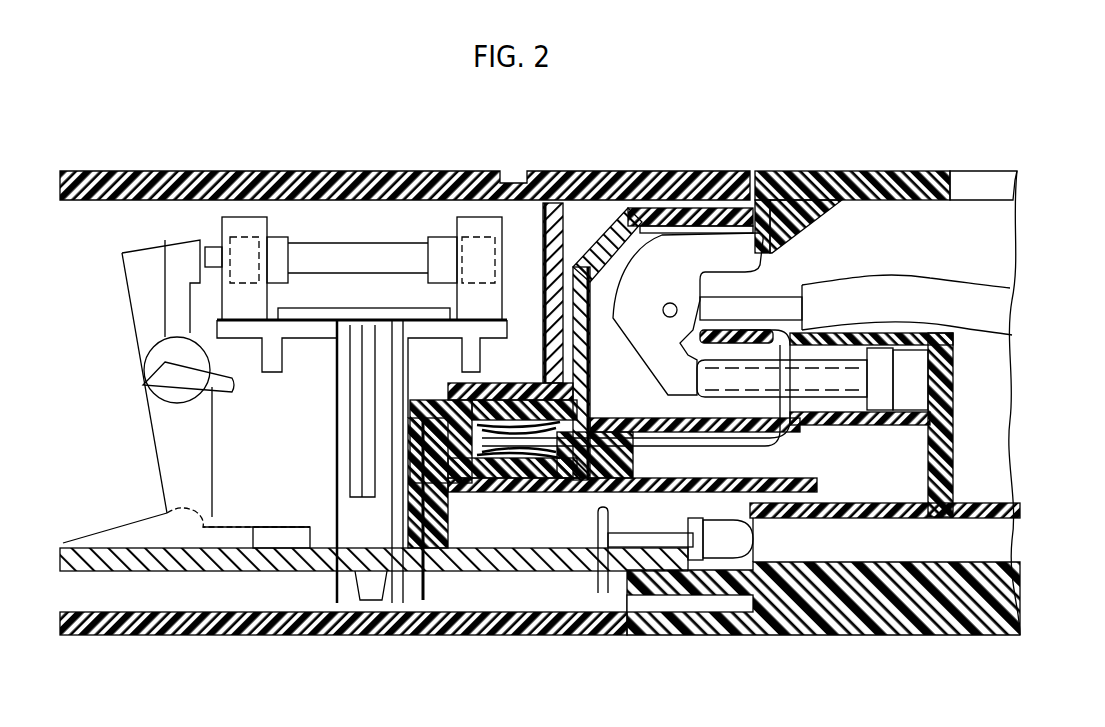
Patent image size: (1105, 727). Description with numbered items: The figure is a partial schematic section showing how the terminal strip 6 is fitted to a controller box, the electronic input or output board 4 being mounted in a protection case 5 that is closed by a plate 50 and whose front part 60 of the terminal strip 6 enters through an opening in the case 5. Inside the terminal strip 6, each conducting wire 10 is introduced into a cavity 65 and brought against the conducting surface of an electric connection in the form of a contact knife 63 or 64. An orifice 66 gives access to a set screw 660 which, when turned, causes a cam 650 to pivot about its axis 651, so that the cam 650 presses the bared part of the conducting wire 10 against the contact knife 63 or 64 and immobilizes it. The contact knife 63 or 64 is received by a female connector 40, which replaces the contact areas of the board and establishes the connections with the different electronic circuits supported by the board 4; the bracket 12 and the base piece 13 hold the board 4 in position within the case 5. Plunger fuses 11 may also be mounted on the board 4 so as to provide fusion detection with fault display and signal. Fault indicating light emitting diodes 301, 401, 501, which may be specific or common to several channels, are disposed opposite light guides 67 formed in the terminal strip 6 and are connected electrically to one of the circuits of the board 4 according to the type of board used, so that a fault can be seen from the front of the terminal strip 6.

The electronic input or output board 4 is at (248, 560).
The protection case 5 is at (73, 172).
The terminal strip 6 is at (848, 636).
The conducting wires 10 is at (988, 300).
The plunger fuses 11 is at (362, 256).
The bracket 12 is at (487, 306).
The base piece 13 is at (228, 526).
The female connector 40 is at (505, 487).
The top plate 50 is at (305, 171).
The front part of the terminal strip 60 is at (588, 392).
The contact knife 63 is at (702, 442).
The contact knife 64 is at (812, 379).
The cavity 65 is at (802, 268).
The orifice 66 is at (954, 383).
The light guide 67 is at (999, 546).
The fault indicating light emitting diode 301 is at (745, 540).
The fault indicating light emitting diode 401 is at (650, 540).
The fault indicating light emitting diode 501 is at (603, 550).
The cam 650 is at (707, 247).
The cam axis 651 is at (670, 303).
The set screw 660 is at (877, 363).